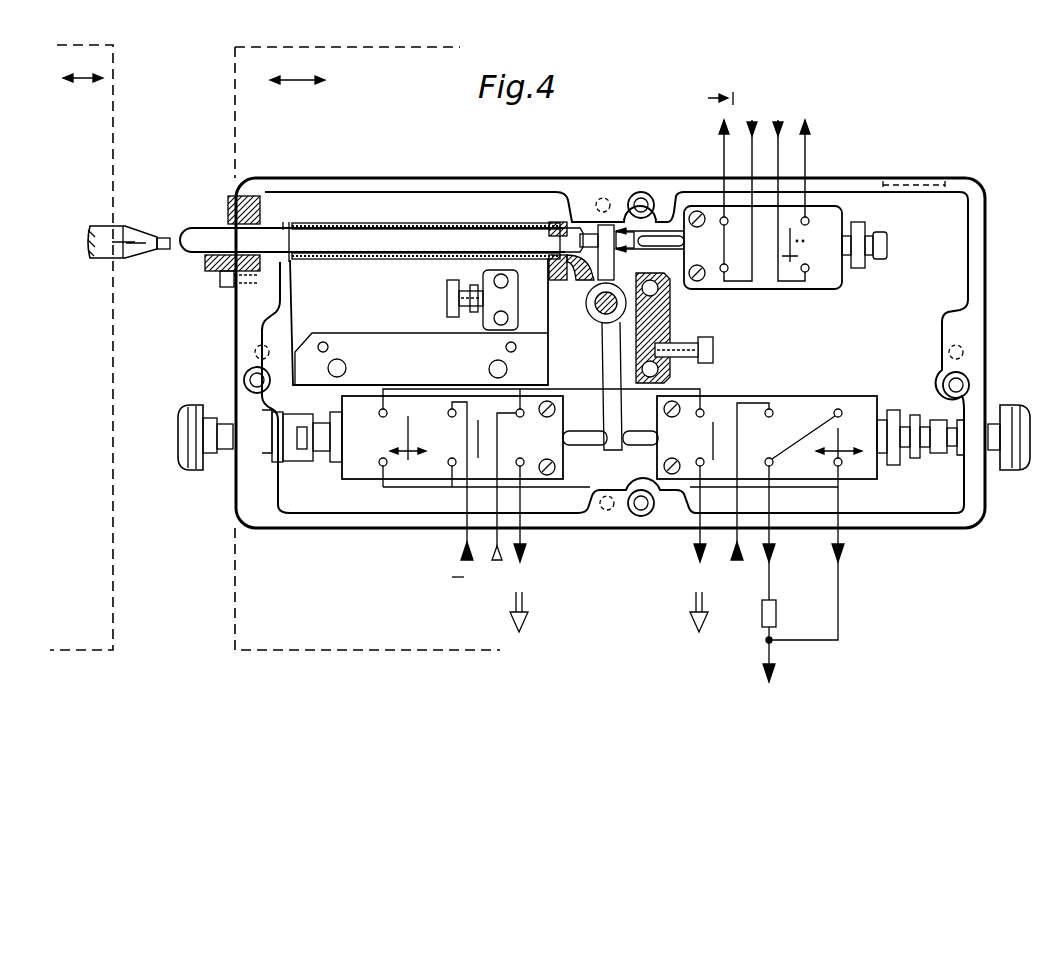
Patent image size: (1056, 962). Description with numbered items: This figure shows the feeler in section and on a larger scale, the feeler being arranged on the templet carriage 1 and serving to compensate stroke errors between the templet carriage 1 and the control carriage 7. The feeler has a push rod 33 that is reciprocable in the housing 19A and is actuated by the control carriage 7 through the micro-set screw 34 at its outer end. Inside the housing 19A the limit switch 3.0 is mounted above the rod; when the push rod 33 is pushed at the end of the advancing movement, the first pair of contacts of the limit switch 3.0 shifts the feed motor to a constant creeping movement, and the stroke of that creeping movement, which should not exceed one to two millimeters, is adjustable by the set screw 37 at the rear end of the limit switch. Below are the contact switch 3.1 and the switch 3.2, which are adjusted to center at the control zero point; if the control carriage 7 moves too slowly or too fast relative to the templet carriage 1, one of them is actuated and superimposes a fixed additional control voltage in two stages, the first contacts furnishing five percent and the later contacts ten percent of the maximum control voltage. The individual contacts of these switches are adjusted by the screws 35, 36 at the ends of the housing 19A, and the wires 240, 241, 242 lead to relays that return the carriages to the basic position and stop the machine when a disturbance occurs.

The templet carriage 1 is at (407, 50).
The control carriage 7 is at (113, 53).
The housing 19A is at (352, 178).
The push rod 33 is at (192, 262).
The micro-set screw 34 is at (108, 262).
The screw 35 is at (190, 470).
The screw 36 is at (330, 470).
The set screw 37 is at (862, 266).
The limit switch 3.0 is at (766, 283).
The contact switch 3.1 is at (428, 470).
The switch 3.2 is at (803, 470).
The wire 240 is at (495, 578).
The wire 241 is at (527, 578).
The wire 242 is at (701, 578).